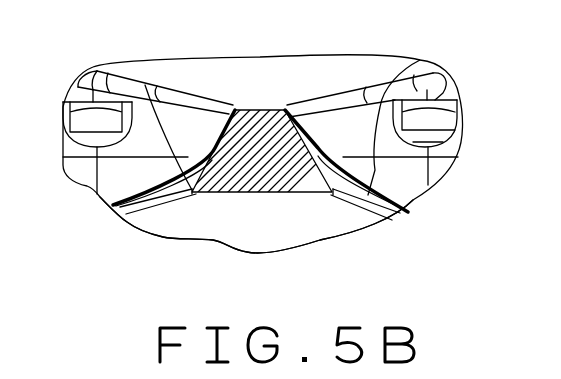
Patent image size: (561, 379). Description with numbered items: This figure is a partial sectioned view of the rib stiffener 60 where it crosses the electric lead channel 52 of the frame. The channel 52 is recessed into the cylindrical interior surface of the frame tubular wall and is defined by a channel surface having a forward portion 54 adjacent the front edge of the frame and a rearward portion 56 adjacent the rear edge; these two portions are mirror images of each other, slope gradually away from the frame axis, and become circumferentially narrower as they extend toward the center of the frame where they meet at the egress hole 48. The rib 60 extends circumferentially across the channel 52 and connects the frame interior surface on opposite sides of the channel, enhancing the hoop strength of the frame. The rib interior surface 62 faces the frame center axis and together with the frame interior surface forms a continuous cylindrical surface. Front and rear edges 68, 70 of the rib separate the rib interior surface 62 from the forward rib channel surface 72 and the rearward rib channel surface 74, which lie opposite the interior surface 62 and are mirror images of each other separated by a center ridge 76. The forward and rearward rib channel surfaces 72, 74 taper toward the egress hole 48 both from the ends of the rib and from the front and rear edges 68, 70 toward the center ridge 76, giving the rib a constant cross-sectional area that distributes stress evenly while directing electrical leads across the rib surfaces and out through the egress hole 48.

The egress hole 48 is at (337, 68).
The electric lead channel 52 is at (408, 178).
The forward portion of the channel surface 54 is at (113, 183).
The rearward portion of the channel surface 56 is at (412, 190).
The rib stiffener 60 is at (172, 232).
The rib interior surface 62 is at (222, 231).
The front edge of the rib 68 is at (145, 85).
The rear edge of the rib 70 is at (405, 123).
The forward rib channel surface 72 is at (193, 163).
The rearward rib channel surface 74 is at (333, 185).
The center ridge 76 is at (252, 106).